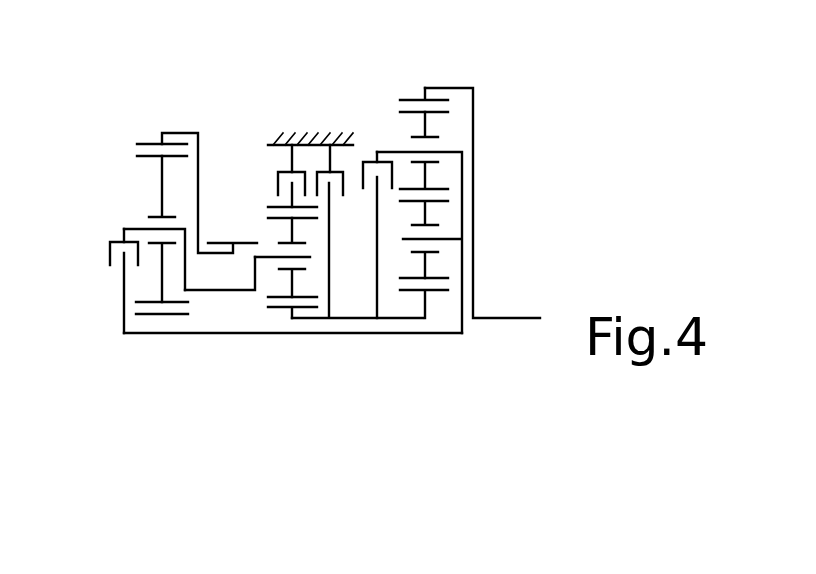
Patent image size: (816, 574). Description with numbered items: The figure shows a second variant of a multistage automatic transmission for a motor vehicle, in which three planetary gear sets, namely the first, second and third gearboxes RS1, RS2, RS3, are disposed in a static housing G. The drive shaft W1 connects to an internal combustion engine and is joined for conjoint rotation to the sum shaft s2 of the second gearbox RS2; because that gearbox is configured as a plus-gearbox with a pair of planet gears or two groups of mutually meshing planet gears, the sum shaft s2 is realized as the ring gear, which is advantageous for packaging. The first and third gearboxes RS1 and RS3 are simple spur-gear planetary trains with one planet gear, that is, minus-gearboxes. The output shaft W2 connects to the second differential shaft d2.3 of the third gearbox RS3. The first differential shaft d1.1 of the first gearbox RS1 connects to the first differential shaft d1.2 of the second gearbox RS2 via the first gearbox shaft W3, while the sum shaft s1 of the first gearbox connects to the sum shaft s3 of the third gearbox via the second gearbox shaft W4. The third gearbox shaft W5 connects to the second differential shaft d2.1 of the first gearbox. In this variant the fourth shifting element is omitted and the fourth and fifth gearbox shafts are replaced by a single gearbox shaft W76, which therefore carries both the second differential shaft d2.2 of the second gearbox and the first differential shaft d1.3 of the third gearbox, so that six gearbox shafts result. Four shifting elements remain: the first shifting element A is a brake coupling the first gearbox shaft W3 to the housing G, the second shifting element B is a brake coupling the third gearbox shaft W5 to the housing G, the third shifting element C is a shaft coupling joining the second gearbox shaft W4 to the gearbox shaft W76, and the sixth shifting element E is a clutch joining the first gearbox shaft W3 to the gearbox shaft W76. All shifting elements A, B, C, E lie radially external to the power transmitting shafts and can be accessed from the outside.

The drive shaft W1 is at (473, 245).
The output shaft W2 is at (178, 132).
The first gearbox shaft W3 is at (365, 322).
The second gearbox shaft W4 is at (212, 291).
The third gearbox shaft W5 is at (294, 190).
The gearbox shaft W76 is at (320, 333).
The first 3-shaft gearbox RS1 is at (272, 233).
The second 3-shaft gearbox RS2 is at (398, 137).
The third 3-shaft gearbox RS3 is at (148, 182).
The sum shaft of first 3-shaft gearbox s1 is at (275, 257).
The sum shaft of second 3-shaft gearbox s2 is at (427, 97).
The sum shaft of third 3-shaft gearbox s3 is at (140, 227).
The first differential shaft of first 3-shaft gearbox d1.1 is at (290, 318).
The second differential shaft of first 3-shaft gearbox d2.1 is at (289, 190).
The first differential shaft of second 3-shaft gearbox d1.2 is at (427, 300).
The second differential shaft of second 3-shaft gearbox d2.2 is at (437, 239).
The first differential shaft of third 3-shaft gearbox d1.3 is at (162, 315).
The second differential shaft of third 3-shaft gearbox d2.3 is at (162, 143).
The first shifting element A is at (343, 185).
The second shifting element B is at (278, 183).
The third shifting element C is at (110, 253).
The sixth shifting element E is at (373, 162).
The housing G is at (327, 137).